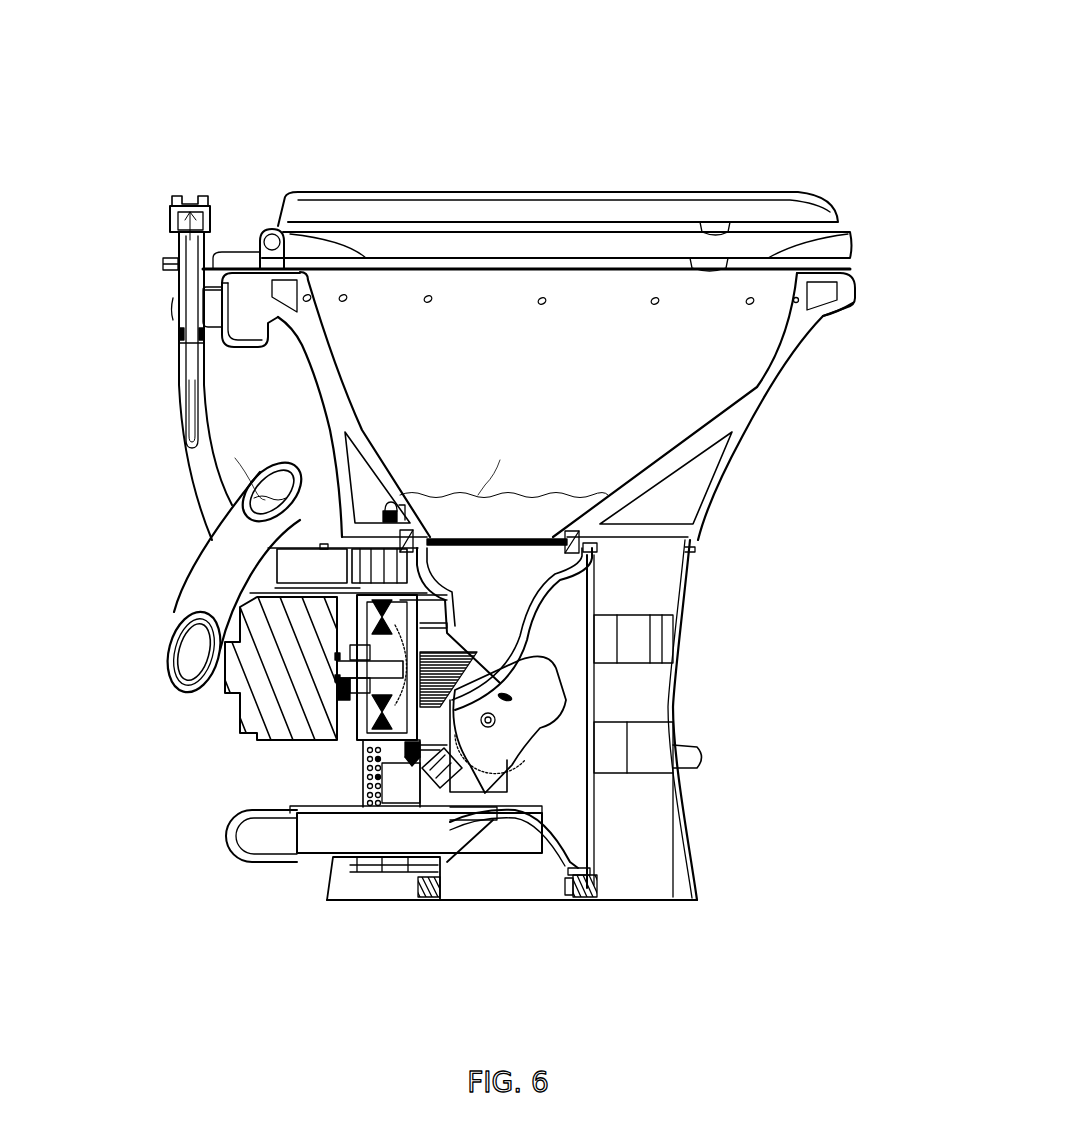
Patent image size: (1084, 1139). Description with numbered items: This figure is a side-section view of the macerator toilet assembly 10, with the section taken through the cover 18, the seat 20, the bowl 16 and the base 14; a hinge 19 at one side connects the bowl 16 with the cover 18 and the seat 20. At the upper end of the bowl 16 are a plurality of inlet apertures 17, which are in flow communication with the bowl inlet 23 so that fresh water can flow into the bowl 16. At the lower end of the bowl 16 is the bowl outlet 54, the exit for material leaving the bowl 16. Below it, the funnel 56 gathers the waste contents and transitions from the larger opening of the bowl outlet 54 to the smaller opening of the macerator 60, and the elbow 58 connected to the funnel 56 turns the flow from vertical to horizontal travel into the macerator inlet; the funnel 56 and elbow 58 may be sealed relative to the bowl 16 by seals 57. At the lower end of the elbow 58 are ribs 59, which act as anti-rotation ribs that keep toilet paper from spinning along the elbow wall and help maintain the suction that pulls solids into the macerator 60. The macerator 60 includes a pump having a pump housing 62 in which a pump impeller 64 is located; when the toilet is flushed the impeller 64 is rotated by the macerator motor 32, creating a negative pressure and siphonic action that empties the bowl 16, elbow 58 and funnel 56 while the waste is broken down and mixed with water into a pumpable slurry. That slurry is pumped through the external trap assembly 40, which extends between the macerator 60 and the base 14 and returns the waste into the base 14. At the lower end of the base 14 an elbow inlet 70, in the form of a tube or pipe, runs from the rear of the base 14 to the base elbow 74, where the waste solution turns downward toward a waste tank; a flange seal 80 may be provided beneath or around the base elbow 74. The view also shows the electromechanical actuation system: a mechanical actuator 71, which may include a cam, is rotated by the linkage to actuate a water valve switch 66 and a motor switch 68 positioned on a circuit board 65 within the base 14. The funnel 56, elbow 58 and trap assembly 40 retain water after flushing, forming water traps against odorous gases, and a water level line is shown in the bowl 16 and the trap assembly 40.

The toilet assembly 10 is at (674, 68).
The base 14 is at (696, 600).
The bowl 16 is at (750, 408).
The inlet apertures 17 is at (540, 306).
The cover 18 is at (759, 188).
The hinge 19 is at (262, 228).
The seat 20 is at (852, 248).
The bowl inlet 23 is at (238, 362).
The macerator motor 32 is at (270, 720).
The external trap assembly 40 is at (172, 563).
The bowl outlet 54 is at (440, 530).
The funnel 56 is at (505, 568).
The seals 57 is at (590, 546).
The elbow 58 is at (520, 664).
The ribs 59 is at (440, 680).
The macerator 60 is at (345, 685).
The pump housing 62 is at (345, 645).
The pump impeller 64 is at (370, 738).
The circuit board 65 is at (368, 760).
The water valve switch 66 is at (440, 792).
The motor switch 68 is at (420, 772).
The elbow inlet 70 is at (320, 845).
The mechanical actuator 71 is at (478, 750).
The base elbow 74 is at (518, 870).
The flange seal 80 is at (597, 880).